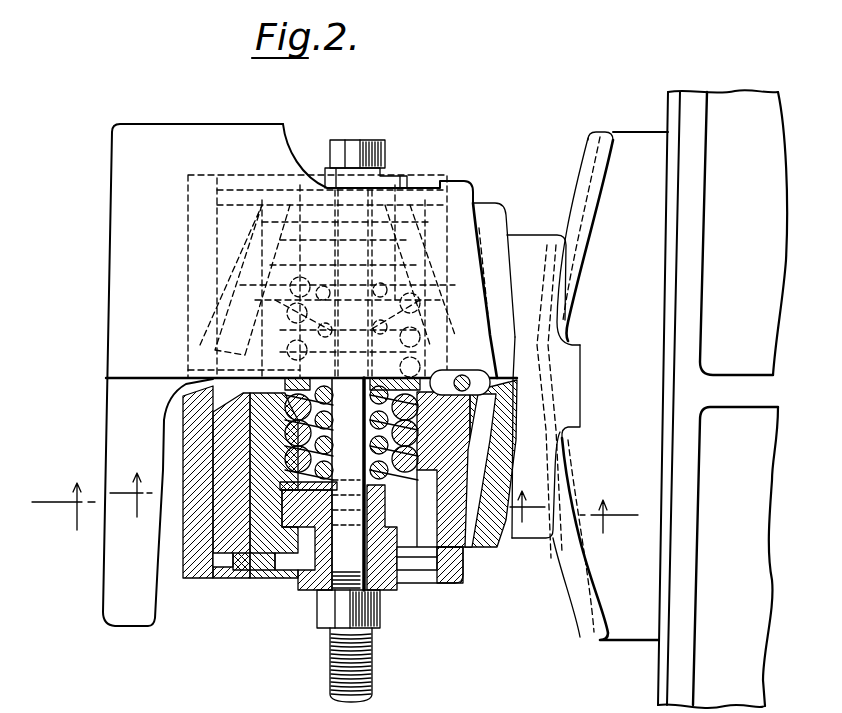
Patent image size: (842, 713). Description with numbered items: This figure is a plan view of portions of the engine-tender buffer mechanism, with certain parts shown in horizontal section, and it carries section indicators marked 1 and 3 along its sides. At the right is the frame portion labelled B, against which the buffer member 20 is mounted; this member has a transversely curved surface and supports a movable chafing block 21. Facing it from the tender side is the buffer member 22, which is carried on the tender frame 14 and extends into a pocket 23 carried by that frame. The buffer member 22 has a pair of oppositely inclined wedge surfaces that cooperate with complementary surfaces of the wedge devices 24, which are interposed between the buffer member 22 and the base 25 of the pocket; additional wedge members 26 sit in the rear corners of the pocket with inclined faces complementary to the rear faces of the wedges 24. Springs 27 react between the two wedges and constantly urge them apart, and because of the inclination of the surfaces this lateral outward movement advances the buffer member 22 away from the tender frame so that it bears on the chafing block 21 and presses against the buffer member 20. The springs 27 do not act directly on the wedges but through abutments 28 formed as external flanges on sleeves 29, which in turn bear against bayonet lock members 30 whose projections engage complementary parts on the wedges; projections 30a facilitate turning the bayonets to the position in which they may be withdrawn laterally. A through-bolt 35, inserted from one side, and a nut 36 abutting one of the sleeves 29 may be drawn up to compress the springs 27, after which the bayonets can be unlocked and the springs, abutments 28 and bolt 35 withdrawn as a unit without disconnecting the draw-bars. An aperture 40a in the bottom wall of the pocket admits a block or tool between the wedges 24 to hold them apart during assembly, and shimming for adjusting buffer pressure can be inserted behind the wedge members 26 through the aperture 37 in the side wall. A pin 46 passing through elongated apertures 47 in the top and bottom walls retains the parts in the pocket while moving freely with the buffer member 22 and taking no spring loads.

The wall B is at (737, 105).
The tender frame 14 is at (112, 289).
The buffer member 20 is at (630, 155).
The chafing block 21 is at (540, 248).
The buffer member 22 is at (480, 212).
The pocket 23 is at (283, 136).
The wedge devices 24 is at (245, 385).
The base of the pocket 25 is at (213, 385).
The additional wedge members 26 is at (232, 175).
The springs 27 is at (285, 440).
The abutments 28 is at (280, 537).
The sleeves 29 is at (320, 530).
The bayonet lock members 30 is at (407, 560).
The projections 30a is at (365, 178).
The through-bolt 35 is at (380, 593).
The nut 36 is at (330, 617).
The aperture 37 is at (243, 557).
The aperture 40a is at (327, 339).
The pin 46 is at (466, 376).
The elongated apertures 47 is at (480, 372).
The section line 1- 1 is at (335, 510).
The section line 3- 3 is at (327, 501).